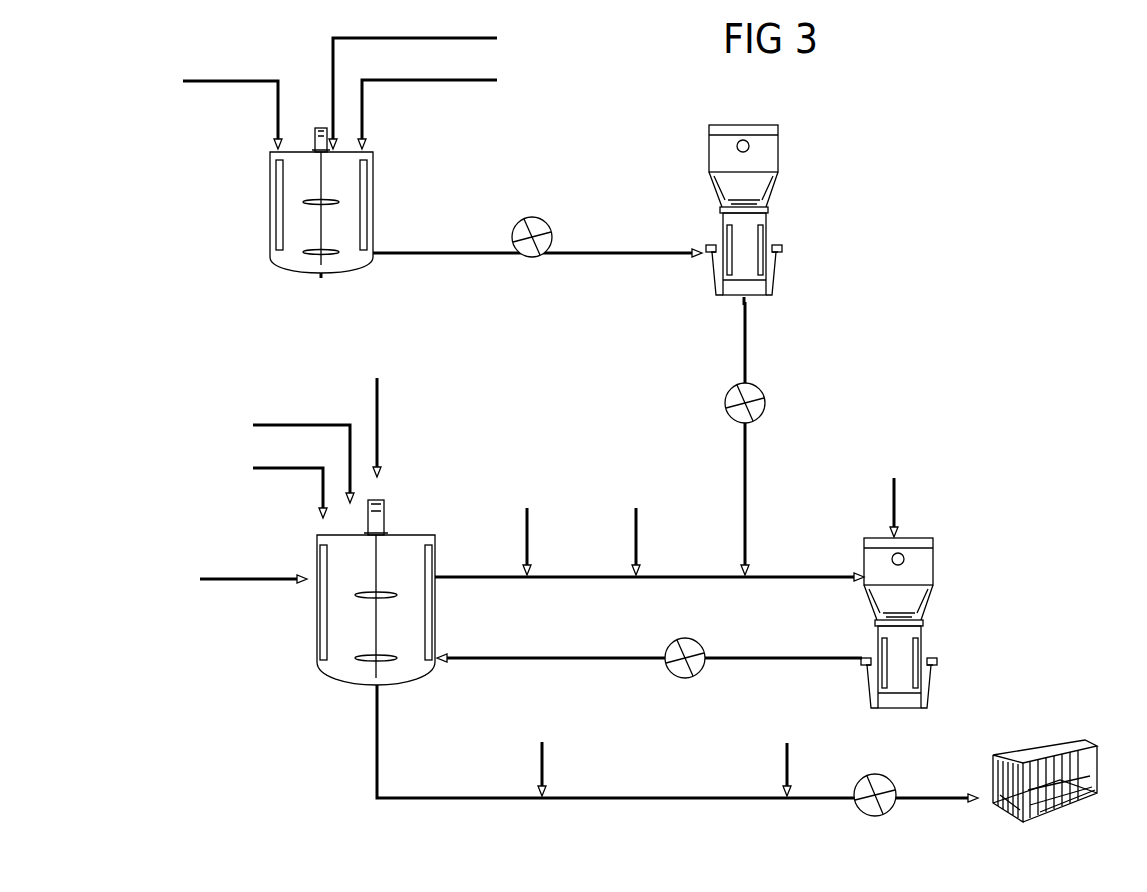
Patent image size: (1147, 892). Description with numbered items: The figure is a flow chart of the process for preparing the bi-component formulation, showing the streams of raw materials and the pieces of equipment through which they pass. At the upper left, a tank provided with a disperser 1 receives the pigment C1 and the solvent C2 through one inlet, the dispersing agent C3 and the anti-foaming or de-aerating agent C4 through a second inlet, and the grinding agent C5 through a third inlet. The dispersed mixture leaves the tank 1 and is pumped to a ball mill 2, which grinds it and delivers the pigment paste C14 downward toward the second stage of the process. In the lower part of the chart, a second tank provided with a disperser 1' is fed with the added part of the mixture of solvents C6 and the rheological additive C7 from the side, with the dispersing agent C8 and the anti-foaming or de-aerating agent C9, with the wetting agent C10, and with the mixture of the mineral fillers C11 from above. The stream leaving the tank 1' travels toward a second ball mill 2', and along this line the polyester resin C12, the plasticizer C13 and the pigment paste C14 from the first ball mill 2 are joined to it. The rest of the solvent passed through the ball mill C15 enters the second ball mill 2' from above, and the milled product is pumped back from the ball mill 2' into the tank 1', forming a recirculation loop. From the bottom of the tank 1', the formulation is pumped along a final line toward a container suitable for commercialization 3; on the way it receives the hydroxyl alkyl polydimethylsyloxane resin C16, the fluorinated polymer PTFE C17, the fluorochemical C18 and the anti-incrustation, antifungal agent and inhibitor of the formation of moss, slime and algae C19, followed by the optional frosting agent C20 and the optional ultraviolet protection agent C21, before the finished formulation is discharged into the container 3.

The tank provided with a disperser 1 is at (304, 203).
The ball mill 2 is at (761, 215).
The tank provided with a disperser 1' is at (359, 592).
The ball mill 2' is at (919, 623).
The container suitable for commercialization 3 is at (1065, 781).
The pigment C1 is at (232, 102).
The solvent C2 is at (232, 102).
The dispersing agent C3 is at (413, 80).
The anti-foaming or de-aerating agent C4 is at (413, 80).
The grinding agent C5 is at (427, 102).
The added part of the mixture of solvents C6 is at (253, 567).
The rheological additive C7 is at (253, 567).
The dispersing agent C8 is at (290, 480).
The anti-foaming or de-aerating agent C9 is at (290, 480).
The wetting agent C10 is at (303, 451).
The mixture of the mineral fillers C11 is at (367, 413).
The polyester resin C12 is at (532, 528).
The plasticizer C13 is at (640, 528).
The pigment paste C14 is at (759, 438).
The rest of the solvent passed through the ball mill C15 is at (899, 493).
The hydroxyl alkyl polydimethylsyloxane resin C16 is at (547, 756).
The fluorinated polymer PTFE C17 is at (547, 756).
The fluorochemical C18 is at (547, 756).
The anti-incrustation, antifungal agent, and inhibitor of the formation of moss, sli C19 is at (547, 756).
The frosting agent C20 is at (792, 755).
The ultraviolet protection agent C21 is at (792, 755).